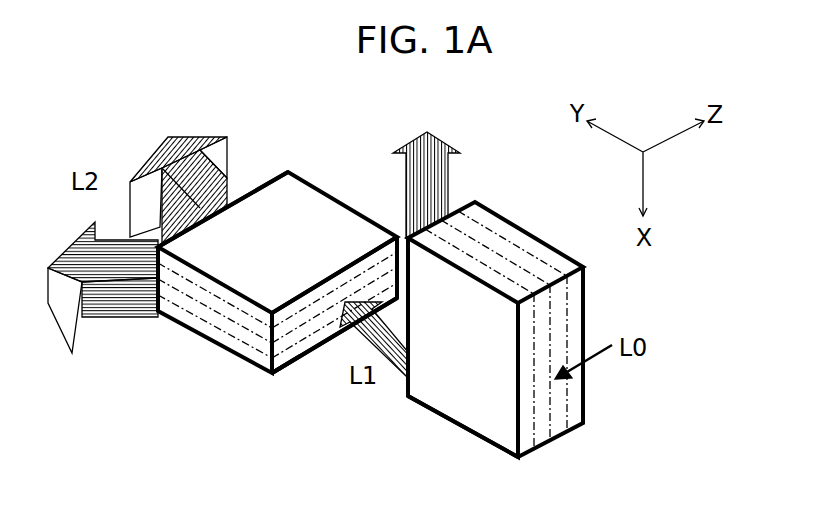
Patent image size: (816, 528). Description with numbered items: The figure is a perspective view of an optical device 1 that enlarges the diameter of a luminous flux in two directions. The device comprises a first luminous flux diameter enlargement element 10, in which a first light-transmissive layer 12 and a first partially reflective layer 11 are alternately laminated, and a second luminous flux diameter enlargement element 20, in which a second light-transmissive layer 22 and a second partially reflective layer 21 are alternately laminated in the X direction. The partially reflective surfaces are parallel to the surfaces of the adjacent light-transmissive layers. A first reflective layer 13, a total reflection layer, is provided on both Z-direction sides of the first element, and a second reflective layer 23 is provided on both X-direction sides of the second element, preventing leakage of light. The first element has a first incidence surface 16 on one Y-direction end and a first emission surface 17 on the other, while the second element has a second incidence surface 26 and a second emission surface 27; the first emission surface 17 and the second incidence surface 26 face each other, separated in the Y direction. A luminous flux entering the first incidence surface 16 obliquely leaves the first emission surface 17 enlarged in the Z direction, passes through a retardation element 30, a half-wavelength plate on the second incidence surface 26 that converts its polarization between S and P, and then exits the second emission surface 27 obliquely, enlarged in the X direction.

The optical device 1 is at (336, 112).
The first luminous flux diameter enlargement element 10 is at (428, 412).
The first partially reflective layer 11 is at (536, 401).
The first light-transmissive layer 12 is at (568, 432).
The first reflective layer 13 is at (484, 416).
The first incidence surface 16 is at (528, 372).
The first emission surface 17 is at (402, 373).
The second luminous flux diameter enlargement element 20 is at (220, 349).
The second partially reflective layer 21 is at (171, 316).
The second light-transmissive layer 22 is at (212, 310).
The second reflective layer 23 is at (325, 343).
The second incidence surface 26 is at (307, 292).
The second emission surface 27 is at (250, 193).
The retardation element 30 is at (296, 368).